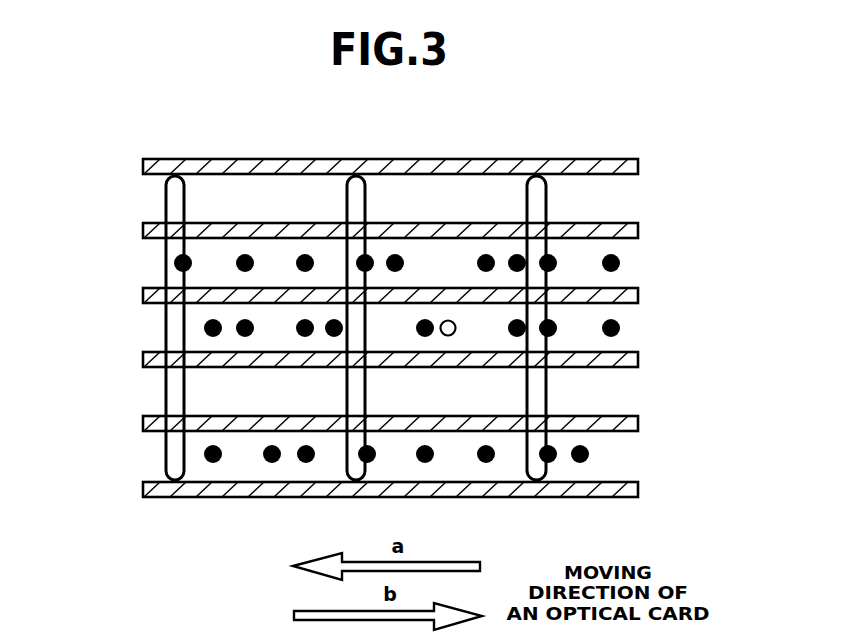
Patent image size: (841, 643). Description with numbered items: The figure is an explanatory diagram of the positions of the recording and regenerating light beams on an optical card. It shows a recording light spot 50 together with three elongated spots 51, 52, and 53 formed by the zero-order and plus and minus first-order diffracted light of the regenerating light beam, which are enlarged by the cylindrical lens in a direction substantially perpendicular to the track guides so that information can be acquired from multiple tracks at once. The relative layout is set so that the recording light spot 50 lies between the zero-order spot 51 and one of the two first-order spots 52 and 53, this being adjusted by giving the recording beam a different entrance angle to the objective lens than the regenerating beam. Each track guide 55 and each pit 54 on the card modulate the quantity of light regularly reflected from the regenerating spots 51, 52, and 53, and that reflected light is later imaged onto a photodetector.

The recording light spot 50 is at (455, 333).
The zero-order regenerating light spot 51 is at (366, 207).
The first-order regenerating light spot 52 is at (547, 194).
The first-order regenerating light spot 53 is at (186, 194).
The pit 54 is at (621, 263).
The track guide 55 is at (143, 357).